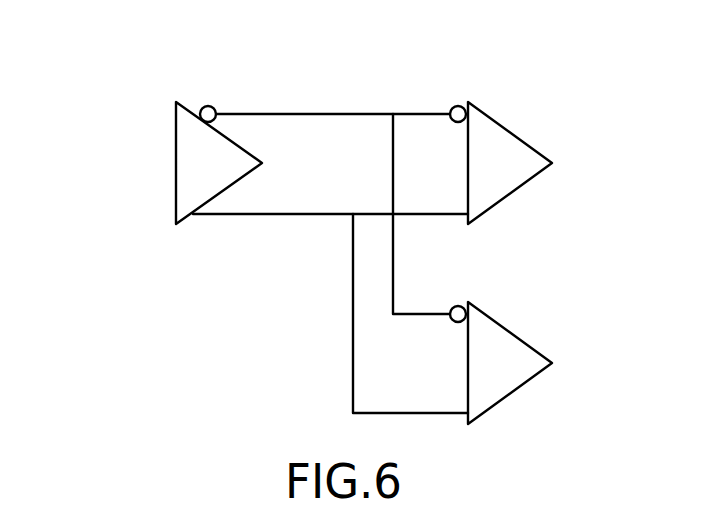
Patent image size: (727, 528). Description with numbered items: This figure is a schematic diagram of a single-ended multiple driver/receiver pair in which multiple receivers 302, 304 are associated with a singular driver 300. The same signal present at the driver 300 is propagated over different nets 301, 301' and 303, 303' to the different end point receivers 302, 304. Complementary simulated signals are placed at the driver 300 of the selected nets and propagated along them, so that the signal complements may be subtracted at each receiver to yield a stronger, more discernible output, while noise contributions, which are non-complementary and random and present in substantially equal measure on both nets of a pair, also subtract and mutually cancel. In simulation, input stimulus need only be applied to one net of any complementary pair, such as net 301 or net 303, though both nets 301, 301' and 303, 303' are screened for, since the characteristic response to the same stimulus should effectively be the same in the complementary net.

The driver 300 is at (176, 130).
The net 301' is at (333, 63).
The net 301 is at (322, 252).
The receiver 302 is at (510, 132).
The net 303' is at (462, 214).
The net 303 is at (340, 313).
The receiver 304 is at (512, 333).